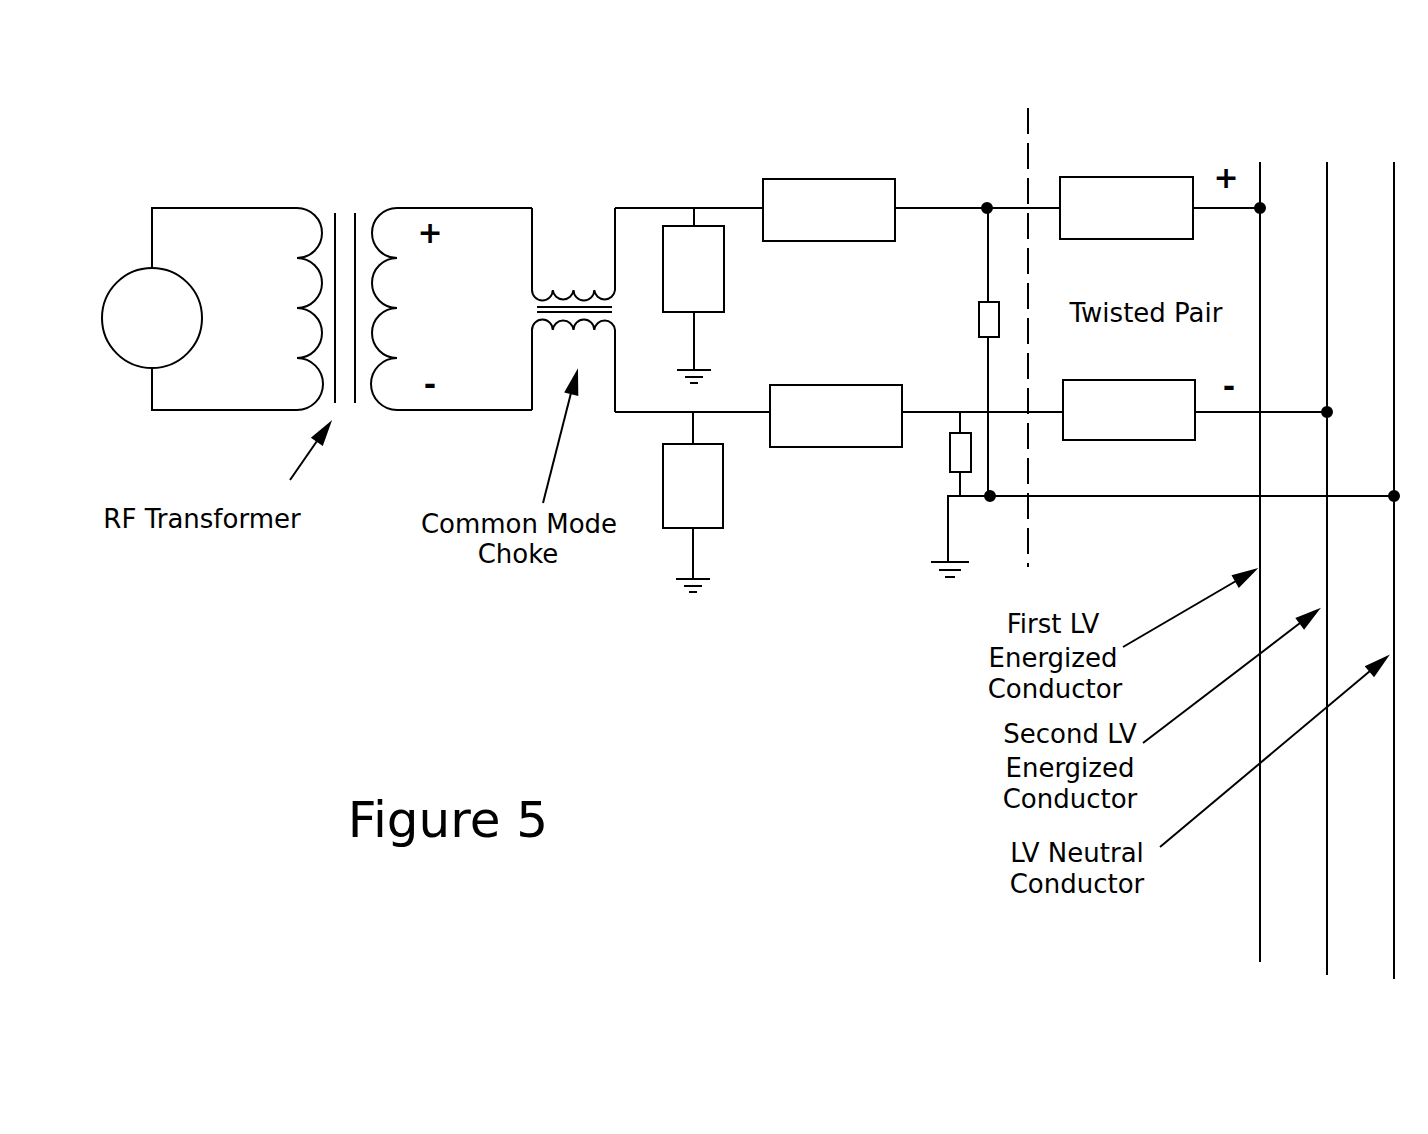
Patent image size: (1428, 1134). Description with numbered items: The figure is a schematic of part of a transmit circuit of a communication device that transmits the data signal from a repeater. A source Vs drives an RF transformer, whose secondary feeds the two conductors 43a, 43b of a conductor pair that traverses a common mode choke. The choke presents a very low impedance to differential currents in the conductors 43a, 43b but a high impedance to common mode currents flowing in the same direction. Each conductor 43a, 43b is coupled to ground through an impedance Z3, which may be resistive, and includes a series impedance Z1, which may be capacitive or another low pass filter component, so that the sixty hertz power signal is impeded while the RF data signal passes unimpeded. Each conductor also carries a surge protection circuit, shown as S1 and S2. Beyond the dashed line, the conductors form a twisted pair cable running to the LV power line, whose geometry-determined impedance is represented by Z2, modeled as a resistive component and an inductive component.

The conductor 43a is at (1004, 178).
The conductor 43b is at (751, 439).
The series impedance Z1 is at (832, 313).
The impedance of twisted pair cable Z2 is at (1127, 308).
The impedance Z3 is at (693, 400).
The surge protection circuit S1 is at (971, 352).
The surge protection circuit S2 is at (941, 454).
The voltage source Vs is at (152, 318).